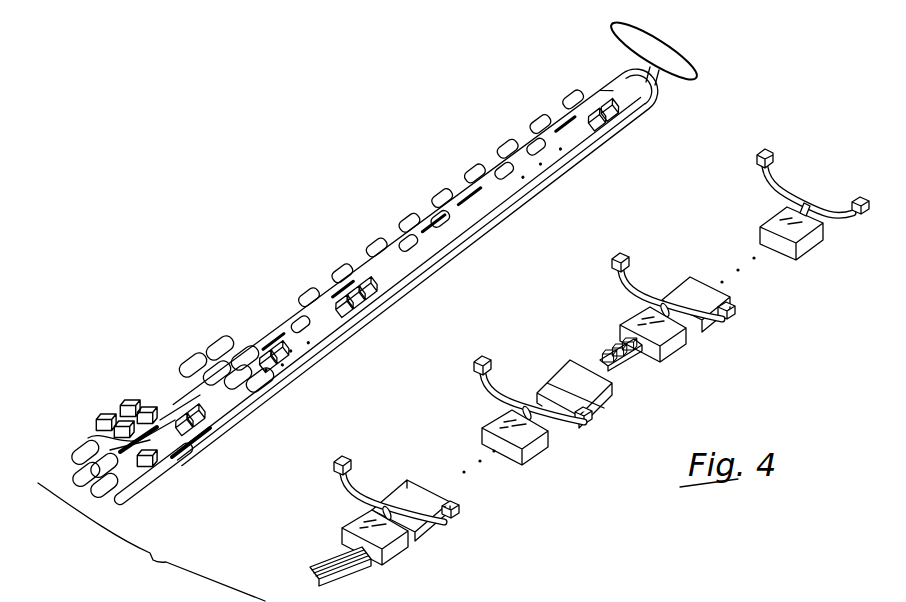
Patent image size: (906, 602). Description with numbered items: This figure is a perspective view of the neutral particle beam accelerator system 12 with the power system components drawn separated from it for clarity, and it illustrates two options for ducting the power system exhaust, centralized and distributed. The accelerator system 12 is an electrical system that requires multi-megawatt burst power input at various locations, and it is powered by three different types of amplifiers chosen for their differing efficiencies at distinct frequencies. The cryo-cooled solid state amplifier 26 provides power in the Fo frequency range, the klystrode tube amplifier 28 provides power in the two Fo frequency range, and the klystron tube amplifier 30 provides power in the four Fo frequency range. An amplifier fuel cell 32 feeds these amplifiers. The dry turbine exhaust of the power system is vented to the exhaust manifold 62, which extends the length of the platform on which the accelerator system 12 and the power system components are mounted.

The neutral particle beam accelerator system 12 is at (588, 88).
The cryo-cooled solid state amplifier 26 is at (132, 398).
The klystrode tube amplifier 28 is at (233, 338).
The klystron tube amplifier 30 is at (434, 192).
The amplifier fuel cell 32 is at (315, 555).
The exhaust manifold 62 is at (763, 183).